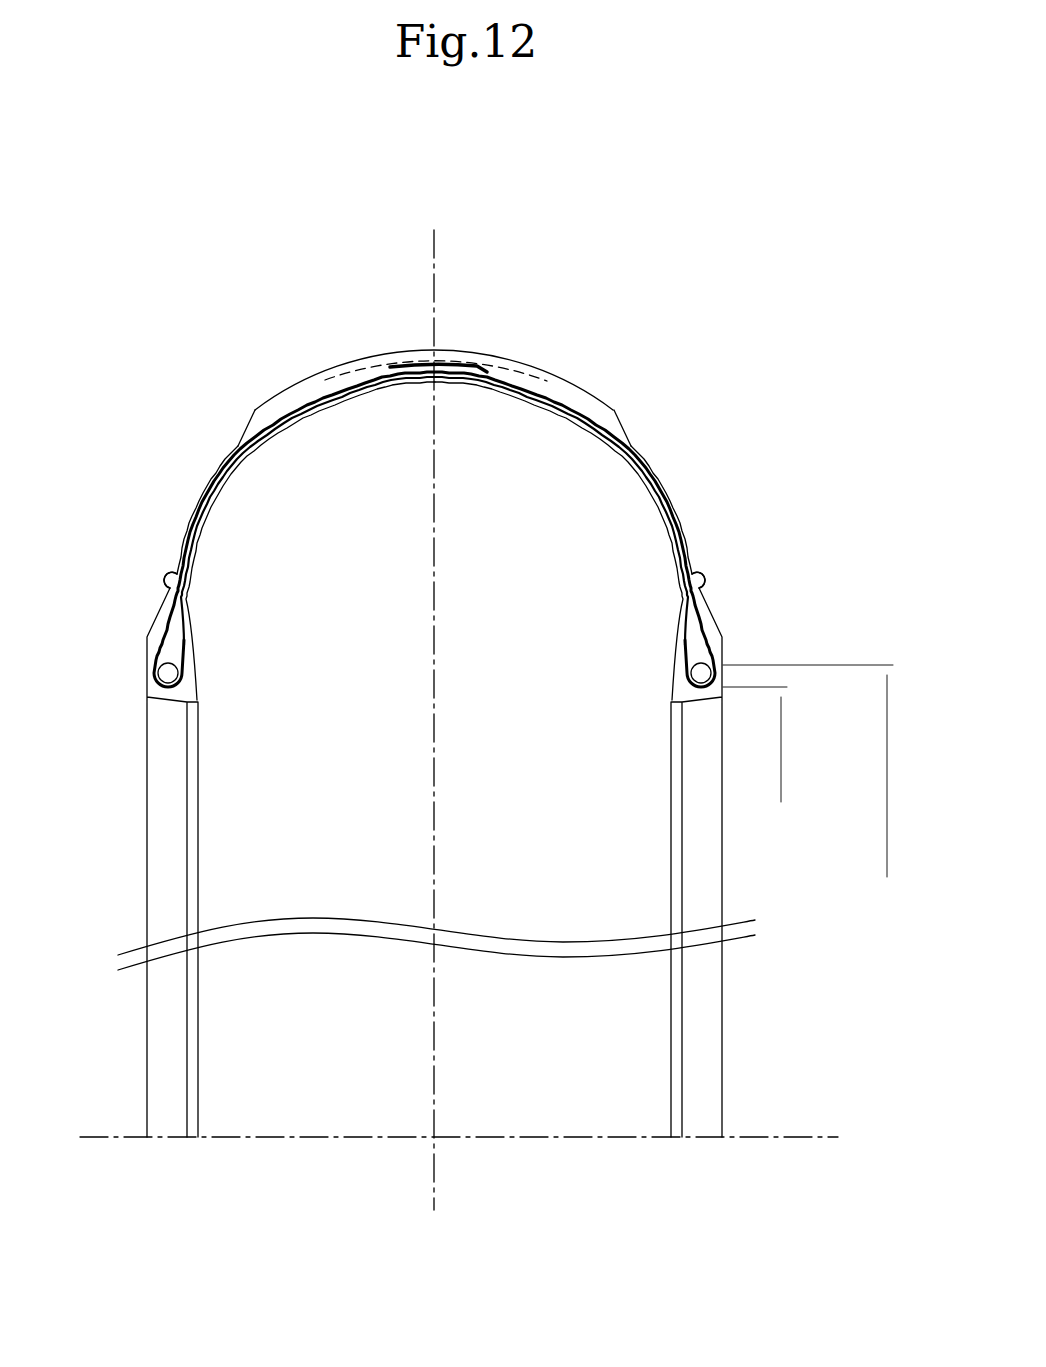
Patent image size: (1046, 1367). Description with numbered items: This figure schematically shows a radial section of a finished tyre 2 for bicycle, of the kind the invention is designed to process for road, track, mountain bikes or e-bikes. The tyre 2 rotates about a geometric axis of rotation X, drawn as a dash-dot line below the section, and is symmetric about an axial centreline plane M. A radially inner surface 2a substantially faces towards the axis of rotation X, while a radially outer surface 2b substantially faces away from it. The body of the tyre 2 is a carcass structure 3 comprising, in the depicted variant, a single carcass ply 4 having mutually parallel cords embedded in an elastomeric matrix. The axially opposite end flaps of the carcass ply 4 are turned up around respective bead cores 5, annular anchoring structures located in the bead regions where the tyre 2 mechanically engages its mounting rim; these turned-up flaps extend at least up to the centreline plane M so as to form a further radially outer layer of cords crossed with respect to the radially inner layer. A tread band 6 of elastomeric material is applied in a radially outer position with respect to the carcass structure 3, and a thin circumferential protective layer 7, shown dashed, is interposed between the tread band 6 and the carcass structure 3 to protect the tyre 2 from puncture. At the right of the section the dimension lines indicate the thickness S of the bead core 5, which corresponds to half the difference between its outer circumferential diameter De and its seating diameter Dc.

The tyre 2 is at (352, 337).
The radially inner surface 2a is at (572, 415).
The radially outer surface 2b is at (620, 425).
The carcass structure 3 is at (203, 617).
The carcass ply 4 is at (156, 632).
The bead core 5 is at (166, 674).
The tread band 6 is at (567, 390).
The circumferential protective layer 7 is at (502, 365).
The axial centreline plane M is at (434, 252).
The geometric axis of rotation X is at (818, 1135).
The thickness of the bead core S is at (781, 655).
The seating diameter Dc is at (781, 752).
The outer circumferential diameter De is at (887, 779).